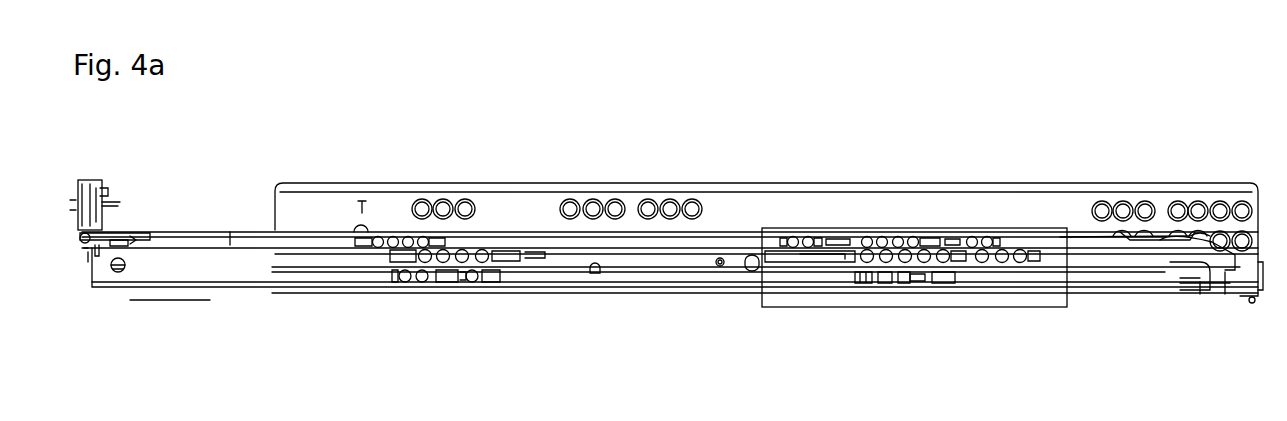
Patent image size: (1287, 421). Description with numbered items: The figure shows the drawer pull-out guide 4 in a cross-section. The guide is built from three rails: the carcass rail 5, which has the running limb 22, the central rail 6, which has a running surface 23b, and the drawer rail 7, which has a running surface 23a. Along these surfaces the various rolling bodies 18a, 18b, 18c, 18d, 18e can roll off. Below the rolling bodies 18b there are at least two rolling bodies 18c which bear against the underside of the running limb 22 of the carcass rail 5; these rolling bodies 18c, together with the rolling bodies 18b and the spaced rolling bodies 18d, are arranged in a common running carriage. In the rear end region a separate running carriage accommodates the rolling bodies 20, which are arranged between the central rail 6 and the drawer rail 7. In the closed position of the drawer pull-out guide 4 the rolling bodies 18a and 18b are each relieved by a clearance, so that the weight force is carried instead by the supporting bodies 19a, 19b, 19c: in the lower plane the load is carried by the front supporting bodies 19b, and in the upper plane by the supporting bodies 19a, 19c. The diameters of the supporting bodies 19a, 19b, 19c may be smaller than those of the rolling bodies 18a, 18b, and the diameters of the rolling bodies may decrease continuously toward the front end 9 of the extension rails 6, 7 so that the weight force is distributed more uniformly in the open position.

The drawer pull-out guide 4 is at (1133, 158).
The carcass rail 5 is at (1022, 190).
The central rail 6 is at (205, 268).
The drawer rail 7 is at (217, 232).
The front end 9 is at (1212, 242).
The rolling bodies 18a is at (913, 237).
The rolling bodies 18b is at (943, 263).
The rolling bodies 18c is at (853, 273).
The rolling bodies 18d is at (482, 250).
The rolling bodies 18e is at (472, 281).
The supporting bodies 19a is at (987, 237).
The supporting bodies 19b is at (1020, 263).
The supporting bodies 19c is at (808, 237).
The rolling bodies 20 is at (423, 236).
The running limb 22 is at (1163, 262).
The running surface 23a is at (265, 242).
The running surface 23b is at (167, 247).